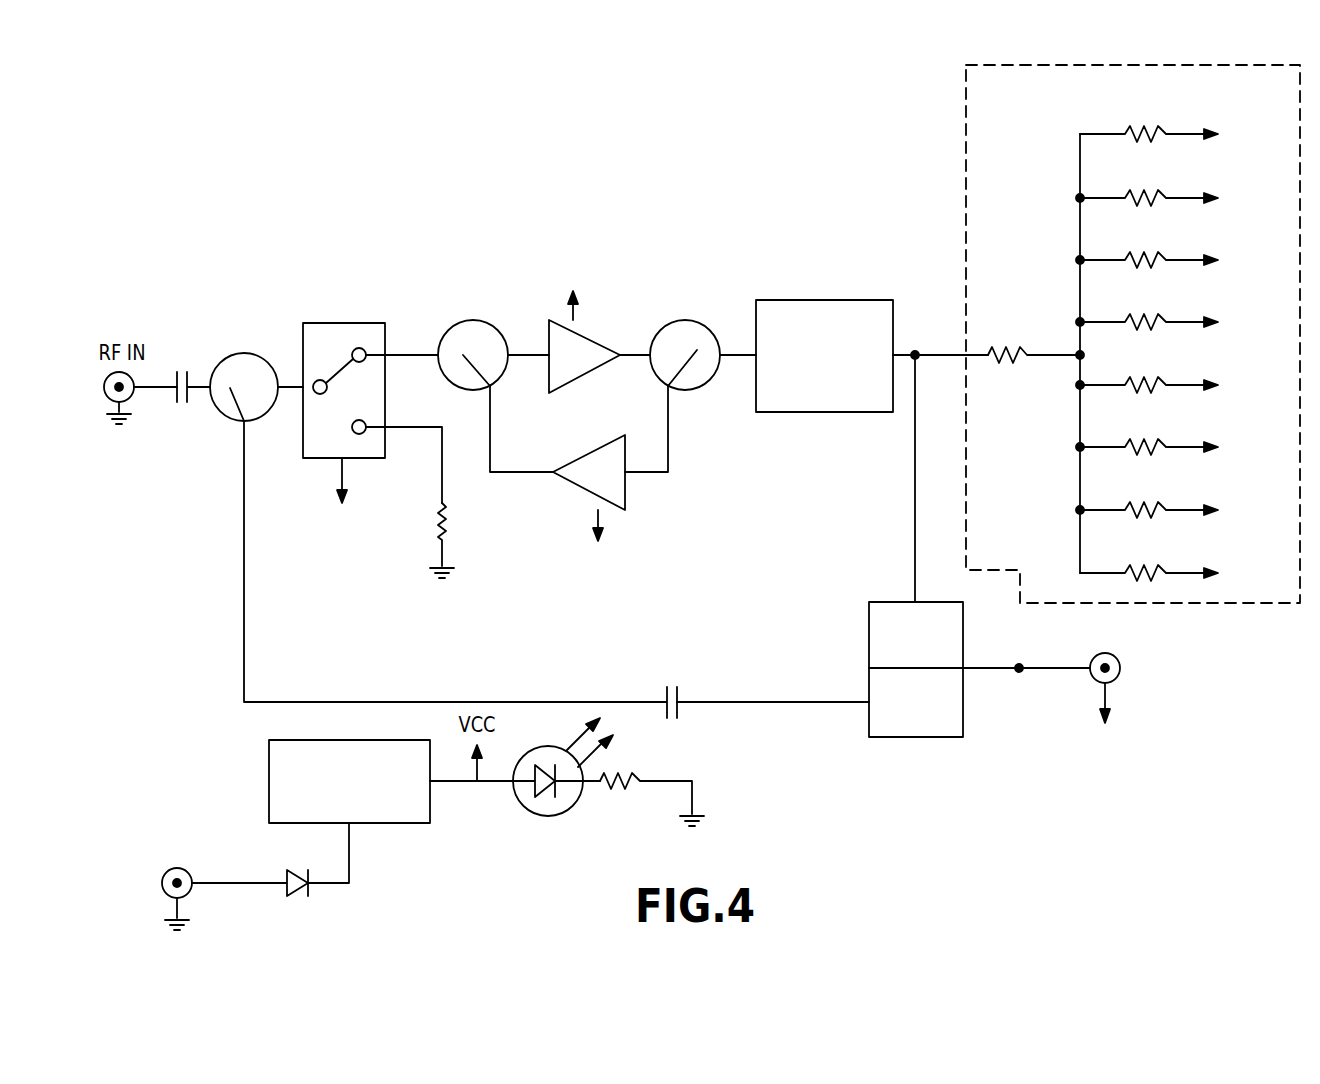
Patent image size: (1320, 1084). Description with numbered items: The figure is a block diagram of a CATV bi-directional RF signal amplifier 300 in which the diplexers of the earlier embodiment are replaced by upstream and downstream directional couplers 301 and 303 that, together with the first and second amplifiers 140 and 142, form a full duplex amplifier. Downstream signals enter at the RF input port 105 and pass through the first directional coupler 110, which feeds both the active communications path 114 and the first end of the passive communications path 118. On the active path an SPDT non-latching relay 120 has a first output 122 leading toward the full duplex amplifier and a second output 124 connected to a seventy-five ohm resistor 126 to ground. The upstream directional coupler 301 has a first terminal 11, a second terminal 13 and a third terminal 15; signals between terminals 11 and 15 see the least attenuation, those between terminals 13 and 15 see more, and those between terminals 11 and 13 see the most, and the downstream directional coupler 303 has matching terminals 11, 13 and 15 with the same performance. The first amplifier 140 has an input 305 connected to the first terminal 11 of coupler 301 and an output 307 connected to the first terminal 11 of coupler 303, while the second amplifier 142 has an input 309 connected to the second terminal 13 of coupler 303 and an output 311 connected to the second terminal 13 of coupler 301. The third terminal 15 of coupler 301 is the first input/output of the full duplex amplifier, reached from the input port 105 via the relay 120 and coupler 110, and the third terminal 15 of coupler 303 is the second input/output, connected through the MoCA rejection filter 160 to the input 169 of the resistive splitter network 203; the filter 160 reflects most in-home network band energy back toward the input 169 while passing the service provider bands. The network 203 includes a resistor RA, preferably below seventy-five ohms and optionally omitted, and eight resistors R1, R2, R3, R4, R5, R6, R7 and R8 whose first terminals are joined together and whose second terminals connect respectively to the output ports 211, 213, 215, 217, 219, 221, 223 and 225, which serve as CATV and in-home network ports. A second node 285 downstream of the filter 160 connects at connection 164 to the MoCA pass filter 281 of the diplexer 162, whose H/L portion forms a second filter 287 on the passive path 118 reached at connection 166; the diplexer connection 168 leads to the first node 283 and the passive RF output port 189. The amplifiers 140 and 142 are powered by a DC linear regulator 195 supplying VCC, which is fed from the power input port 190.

The CATV bi-directional RF signal amplifier 300 is at (347, 203).
The RF input port 105 is at (131, 396).
The first directional coupler 110 is at (232, 340).
The relay 120 is at (344, 396).
The first output of the relay 122 is at (392, 353).
The second output of the relay 124 is at (404, 465).
The resistor 126 is at (459, 540).
The third terminal 15 is at (390, 360).
The first terminal 11 is at (512, 350).
The second terminal 13 is at (490, 405).
The active communications path 114 is at (585, 202).
The passive communications path 118 is at (460, 569).
The upstream directional coupler 301 is at (452, 325).
The downstream directional coupler 303 is at (690, 322).
The input of the first amplifier 305 is at (535, 348).
The output of the first amplifier 307 is at (626, 350).
The input of the second amplifier 309 is at (652, 474).
The output of the second amplifier 311 is at (522, 474).
The first amplifier 140 is at (584, 329).
The second amplifier 142 is at (589, 502).
The MoCA rejection filter 160 is at (806, 300).
The input of the resistive splitter network 169 is at (930, 355).
The second node 285 is at (913, 365).
The resistive splitter network 203 is at (966, 108).
The resistor RA is at (1012, 345).
The resistor R1 is at (1146, 126).
The resistor R2 is at (1146, 190).
The resistor R3 is at (1146, 252).
The resistor R4 is at (1146, 314).
The resistor R5 is at (1146, 377).
The resistor R6 is at (1146, 439).
The resistor R7 is at (1146, 502).
The resistor R8 is at (1146, 565).
The first output port 211 is at (1208, 130).
The first output port 213 is at (1212, 198).
The first output port 215 is at (1212, 260).
The first output port 217 is at (1212, 322).
The first output port 219 is at (1212, 385).
The first output port 221 is at (1212, 447).
The first output port 223 is at (1212, 510).
The first output port 225 is at (1212, 573).
The diplexer 162 is at (916, 702).
The diplexer MoCA port 164 is at (890, 585).
The diplexer high/low port 166 is at (773, 687).
The diplexer common port 168 is at (1026, 656).
The MoCA pass filter 281 is at (869, 620).
The second filter 287 is at (869, 720).
The first node 283 is at (1019, 670).
The passive RF output port 189 is at (1105, 674).
The power input port 190 is at (190, 893).
The DC linear regulator 195 is at (269, 767).